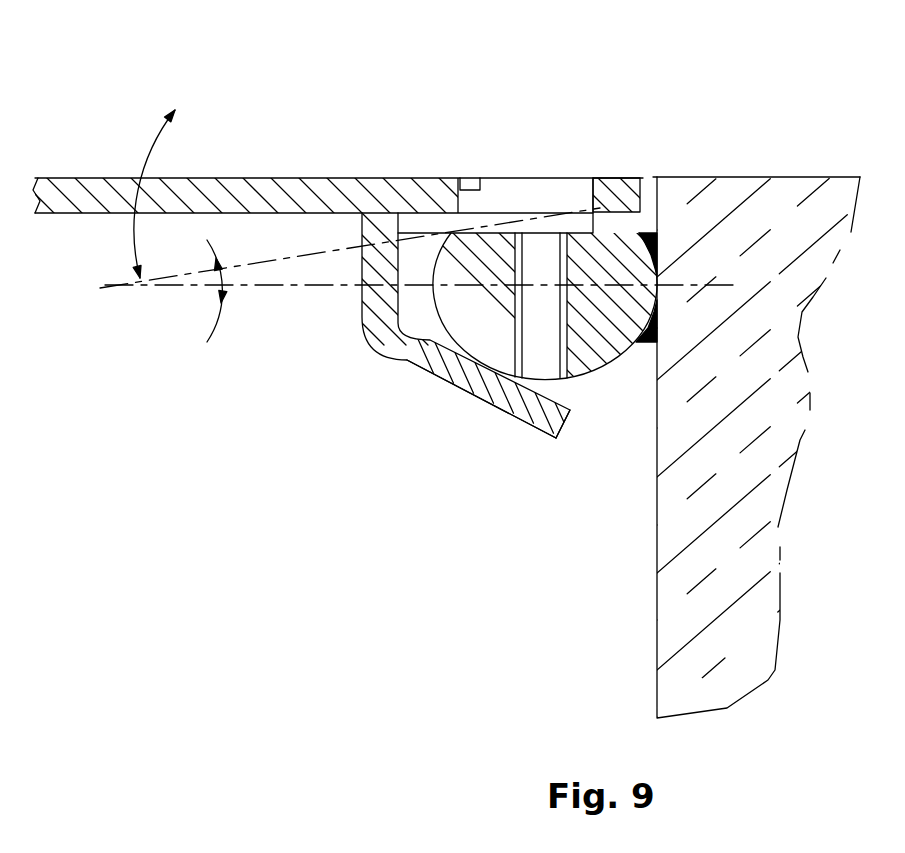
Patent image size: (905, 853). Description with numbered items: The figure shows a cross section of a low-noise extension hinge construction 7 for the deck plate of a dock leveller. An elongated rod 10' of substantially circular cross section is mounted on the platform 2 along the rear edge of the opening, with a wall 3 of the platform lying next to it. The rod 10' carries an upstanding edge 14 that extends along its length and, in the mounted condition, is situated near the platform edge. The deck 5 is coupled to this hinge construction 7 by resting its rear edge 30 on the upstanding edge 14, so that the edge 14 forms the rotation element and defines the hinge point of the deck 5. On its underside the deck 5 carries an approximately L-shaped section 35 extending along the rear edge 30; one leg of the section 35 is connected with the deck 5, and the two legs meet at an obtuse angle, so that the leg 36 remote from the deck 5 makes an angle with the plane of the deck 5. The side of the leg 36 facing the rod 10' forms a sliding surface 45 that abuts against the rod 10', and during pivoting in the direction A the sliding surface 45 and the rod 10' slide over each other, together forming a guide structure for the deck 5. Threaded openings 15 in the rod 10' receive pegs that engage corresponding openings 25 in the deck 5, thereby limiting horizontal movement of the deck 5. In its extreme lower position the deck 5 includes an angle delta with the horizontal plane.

The platform 2 is at (750, 168).
The wall 3 is at (648, 652).
The deck 5 is at (268, 188).
The hinge construction 7 is at (565, 95).
The elongated rod 10' is at (580, 335).
The upstanding edge 14 is at (620, 224).
The threaded opening 15 is at (543, 383).
The opening 25 is at (478, 190).
The rear edge 30 is at (620, 168).
The section 35 is at (380, 310).
The leg 36 is at (458, 395).
The sliding surface 45 is at (568, 401).
The pivot direction A is at (150, 153).